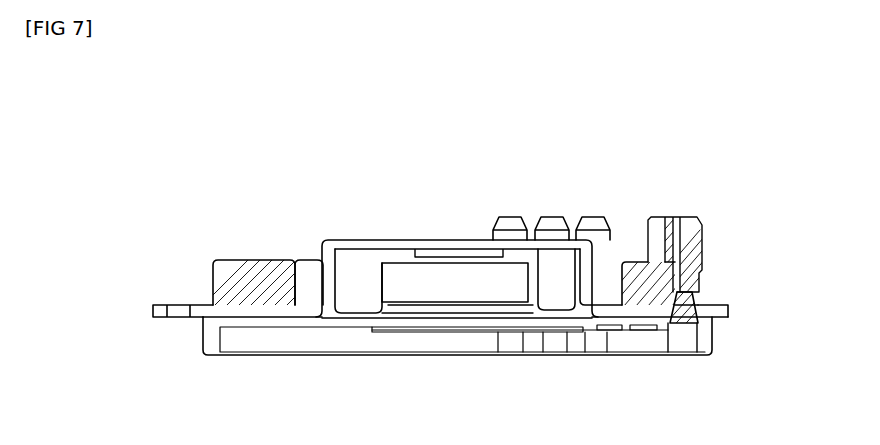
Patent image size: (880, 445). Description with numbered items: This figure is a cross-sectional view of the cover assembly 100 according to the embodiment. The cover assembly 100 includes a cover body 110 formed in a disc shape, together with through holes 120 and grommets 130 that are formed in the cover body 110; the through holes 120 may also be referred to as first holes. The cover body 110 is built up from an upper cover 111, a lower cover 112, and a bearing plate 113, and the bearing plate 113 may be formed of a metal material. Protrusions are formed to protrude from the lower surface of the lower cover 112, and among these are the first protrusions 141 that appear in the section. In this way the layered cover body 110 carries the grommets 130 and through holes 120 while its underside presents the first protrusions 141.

The cover assembly 100 is at (163, 120).
The cover body 110 is at (295, 404).
The upper cover 111 is at (275, 290).
The lower cover 112 is at (213, 352).
The bearing plate 113 is at (250, 306).
The through holes 120 is at (700, 327).
The grommets 130 is at (513, 210).
The first protrusions 141 is at (668, 320).